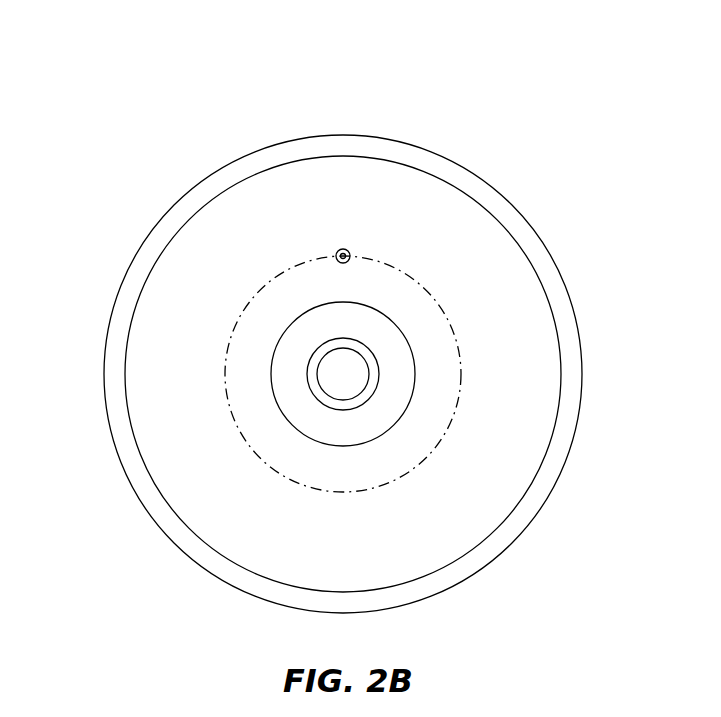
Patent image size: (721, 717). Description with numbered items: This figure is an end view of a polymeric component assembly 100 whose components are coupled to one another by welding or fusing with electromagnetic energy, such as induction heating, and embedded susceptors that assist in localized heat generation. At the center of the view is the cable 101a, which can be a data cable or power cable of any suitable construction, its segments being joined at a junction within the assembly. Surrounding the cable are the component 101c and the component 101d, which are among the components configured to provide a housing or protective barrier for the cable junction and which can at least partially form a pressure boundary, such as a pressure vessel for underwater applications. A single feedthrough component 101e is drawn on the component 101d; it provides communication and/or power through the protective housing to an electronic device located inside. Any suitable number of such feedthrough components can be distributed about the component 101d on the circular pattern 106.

The component assembly 100 is at (207, 56).
The cable 101a is at (318, 398).
The component 101c is at (167, 214).
The component 101d is at (153, 352).
The feedthrough component 101e is at (343, 249).
The circular pattern 106 is at (462, 369).